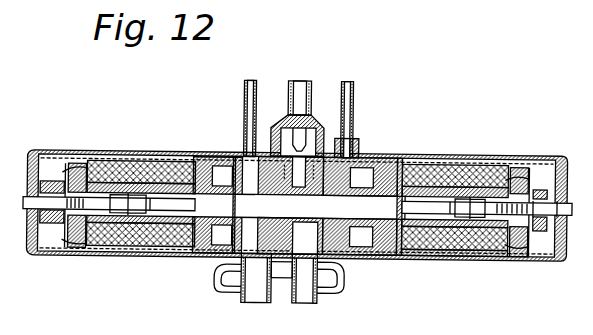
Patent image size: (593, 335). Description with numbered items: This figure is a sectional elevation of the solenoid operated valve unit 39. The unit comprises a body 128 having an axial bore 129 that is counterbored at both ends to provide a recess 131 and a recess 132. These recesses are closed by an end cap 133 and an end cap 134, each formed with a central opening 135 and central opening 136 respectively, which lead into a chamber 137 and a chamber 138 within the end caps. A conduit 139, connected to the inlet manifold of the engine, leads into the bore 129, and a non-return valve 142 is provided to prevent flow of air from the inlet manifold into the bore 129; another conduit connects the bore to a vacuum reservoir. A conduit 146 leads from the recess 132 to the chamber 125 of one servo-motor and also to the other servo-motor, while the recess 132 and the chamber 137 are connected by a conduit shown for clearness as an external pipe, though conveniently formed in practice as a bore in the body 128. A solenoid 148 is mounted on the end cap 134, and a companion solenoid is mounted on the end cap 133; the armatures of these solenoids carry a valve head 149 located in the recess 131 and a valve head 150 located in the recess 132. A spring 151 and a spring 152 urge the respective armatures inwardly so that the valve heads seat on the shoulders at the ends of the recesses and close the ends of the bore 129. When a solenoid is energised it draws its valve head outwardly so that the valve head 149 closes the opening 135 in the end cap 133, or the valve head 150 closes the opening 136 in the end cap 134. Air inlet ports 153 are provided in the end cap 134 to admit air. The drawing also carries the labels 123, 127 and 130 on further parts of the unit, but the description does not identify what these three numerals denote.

The solenoid operated valve unit 39 is at (445, 148).
The outlet pipe 123 is at (320, 298).
The chamber 125 is at (246, 81).
The housing lining 127 is at (107, 163).
The body 128 is at (226, 156).
The axial bore 129 is at (265, 156).
The downpipe 130 is at (232, 291).
The recess 131 is at (215, 157).
The recess 132 is at (358, 156).
The end cap 133 is at (205, 160).
The end cap 134 is at (368, 157).
The central opening 135 is at (192, 249).
The central opening 136 is at (430, 240).
The chamber 137 is at (163, 163).
The chamber 138 is at (440, 250).
The conduit 139 is at (316, 74).
The non-return valve 142 is at (345, 125).
The conduit 146 is at (360, 74).
The solenoid 148 is at (497, 180).
The valve head 149 is at (217, 260).
The valve head 150 is at (433, 260).
The spring 151 is at (132, 220).
The spring 152 is at (466, 205).
The air inlet ports 153 is at (399, 157).